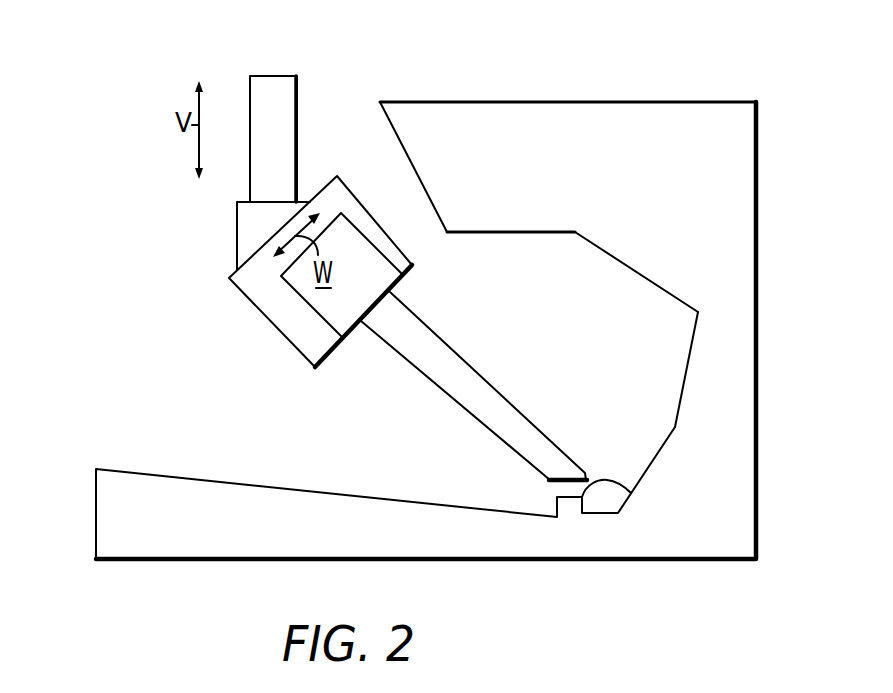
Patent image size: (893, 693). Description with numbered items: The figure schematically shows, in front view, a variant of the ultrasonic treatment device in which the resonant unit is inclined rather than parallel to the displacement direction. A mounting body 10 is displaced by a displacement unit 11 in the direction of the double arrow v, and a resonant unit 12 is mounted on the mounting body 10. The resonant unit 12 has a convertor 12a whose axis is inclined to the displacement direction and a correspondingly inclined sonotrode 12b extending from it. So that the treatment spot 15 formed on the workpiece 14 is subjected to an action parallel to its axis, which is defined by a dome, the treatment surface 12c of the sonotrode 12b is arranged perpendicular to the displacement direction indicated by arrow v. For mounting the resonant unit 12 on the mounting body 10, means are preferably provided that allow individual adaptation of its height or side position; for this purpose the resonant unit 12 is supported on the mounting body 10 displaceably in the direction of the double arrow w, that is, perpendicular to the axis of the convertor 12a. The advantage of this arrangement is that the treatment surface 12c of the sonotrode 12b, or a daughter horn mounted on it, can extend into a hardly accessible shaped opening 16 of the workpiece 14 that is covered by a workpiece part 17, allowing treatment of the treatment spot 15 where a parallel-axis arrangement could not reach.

The mounting body 10 is at (234, 221).
The displacement unit 11 is at (273, 112).
The resonant unit 12 is at (283, 317).
The convertor 12a is at (382, 275).
The sonotrode 12b is at (493, 398).
The treatment surface 12c is at (560, 488).
The workpiece 14 is at (761, 207).
The treatment spot 15 is at (630, 492).
The shaped opening 16 is at (682, 347).
The workpiece part 17 is at (597, 113).